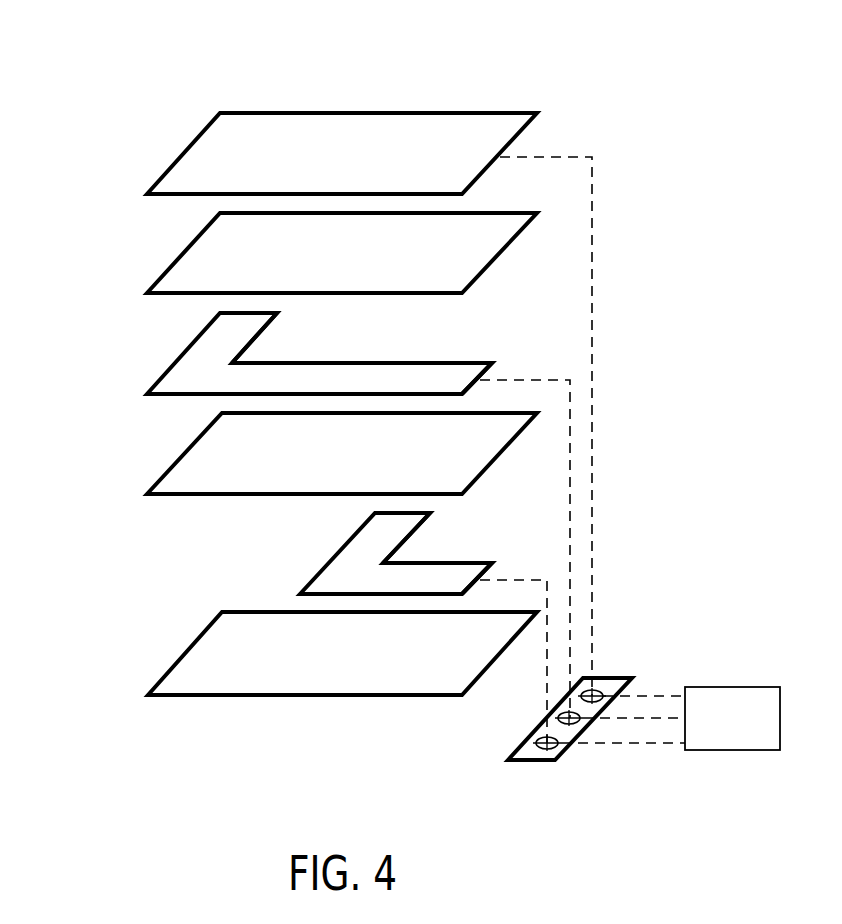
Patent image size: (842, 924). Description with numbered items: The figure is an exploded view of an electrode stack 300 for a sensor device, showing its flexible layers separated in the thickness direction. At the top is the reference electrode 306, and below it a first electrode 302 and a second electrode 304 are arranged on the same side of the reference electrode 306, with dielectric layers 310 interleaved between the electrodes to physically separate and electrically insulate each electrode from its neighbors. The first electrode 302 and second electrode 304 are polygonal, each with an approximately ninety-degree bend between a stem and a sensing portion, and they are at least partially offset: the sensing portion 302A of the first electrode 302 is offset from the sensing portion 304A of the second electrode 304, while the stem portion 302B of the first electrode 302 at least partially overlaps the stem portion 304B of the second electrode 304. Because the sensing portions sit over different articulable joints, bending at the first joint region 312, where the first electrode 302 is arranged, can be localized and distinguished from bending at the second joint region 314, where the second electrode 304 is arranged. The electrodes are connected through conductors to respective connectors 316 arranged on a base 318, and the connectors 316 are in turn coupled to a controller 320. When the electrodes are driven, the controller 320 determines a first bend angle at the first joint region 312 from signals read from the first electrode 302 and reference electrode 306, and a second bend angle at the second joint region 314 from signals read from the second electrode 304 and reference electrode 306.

The electrode stack 300 is at (482, 42).
The first electrode 302 is at (147, 394).
The sensing portion of first electrode 302A is at (231, 337).
The stem portion of first electrode 302B is at (425, 373).
The second electrode 304 is at (300, 593).
The sensing portion of second electrode 304A is at (381, 537).
The stem portion of second electrode 304B is at (453, 580).
The reference electrode 306 is at (147, 194).
The dielectric layer 310 is at (147, 293).
The first joint region 312 is at (296, 330).
The second joint region 314 is at (448, 513).
The connectors 316 is at (505, 709).
The base 318 is at (535, 763).
The controller 320 is at (749, 730).